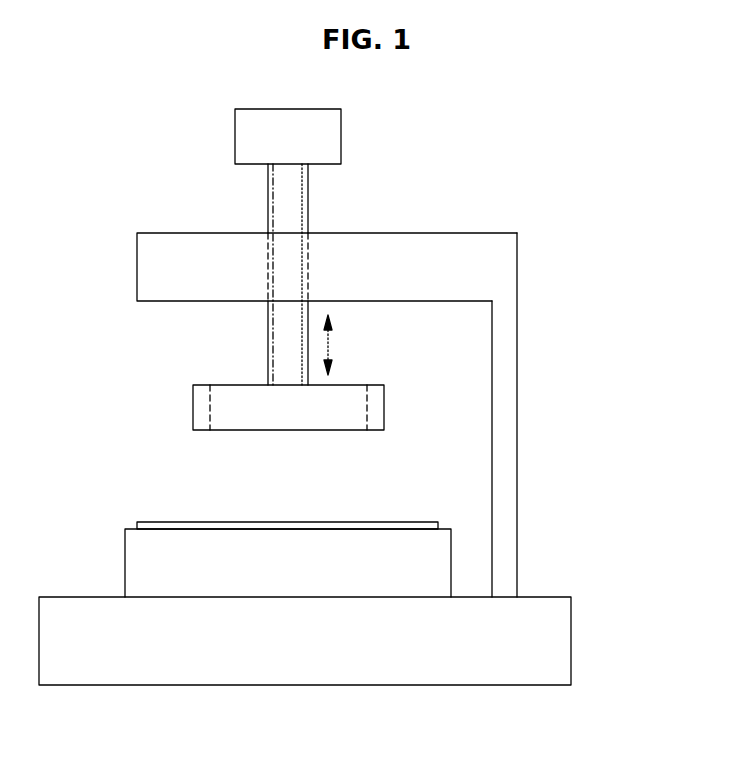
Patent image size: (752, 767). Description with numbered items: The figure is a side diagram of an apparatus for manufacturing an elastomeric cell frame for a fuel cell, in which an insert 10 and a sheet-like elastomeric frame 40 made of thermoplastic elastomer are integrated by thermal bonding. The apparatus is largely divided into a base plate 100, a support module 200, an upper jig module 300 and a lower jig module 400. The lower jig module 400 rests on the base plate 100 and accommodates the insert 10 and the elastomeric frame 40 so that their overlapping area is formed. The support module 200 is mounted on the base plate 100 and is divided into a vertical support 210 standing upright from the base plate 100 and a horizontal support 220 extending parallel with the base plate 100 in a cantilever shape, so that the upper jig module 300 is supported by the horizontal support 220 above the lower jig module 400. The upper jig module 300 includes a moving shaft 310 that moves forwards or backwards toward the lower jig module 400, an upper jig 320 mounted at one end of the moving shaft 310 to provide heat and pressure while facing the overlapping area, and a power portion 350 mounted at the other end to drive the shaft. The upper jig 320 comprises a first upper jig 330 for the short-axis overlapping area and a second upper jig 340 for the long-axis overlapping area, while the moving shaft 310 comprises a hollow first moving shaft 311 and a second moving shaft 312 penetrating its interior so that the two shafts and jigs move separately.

The base plate 100 is at (553, 641).
The support module 200 is at (425, 408).
The vertical support 210 is at (508, 330).
The horizontal support 220 is at (460, 243).
The upper jig module 300 is at (345, 429).
The moving shaft 310 is at (367, 274).
The first moving shaft 311 is at (308, 178).
The second moving shaft 312 is at (302, 205).
The upper jig 320 is at (207, 391).
The first upper jig 330 is at (197, 405).
The second upper jig 340 is at (234, 398).
The power portion 350 is at (341, 135).
The lower jig module 400 is at (431, 563).
The insert 10 is at (237, 504).
The elastomeric frame 40 is at (148, 522).